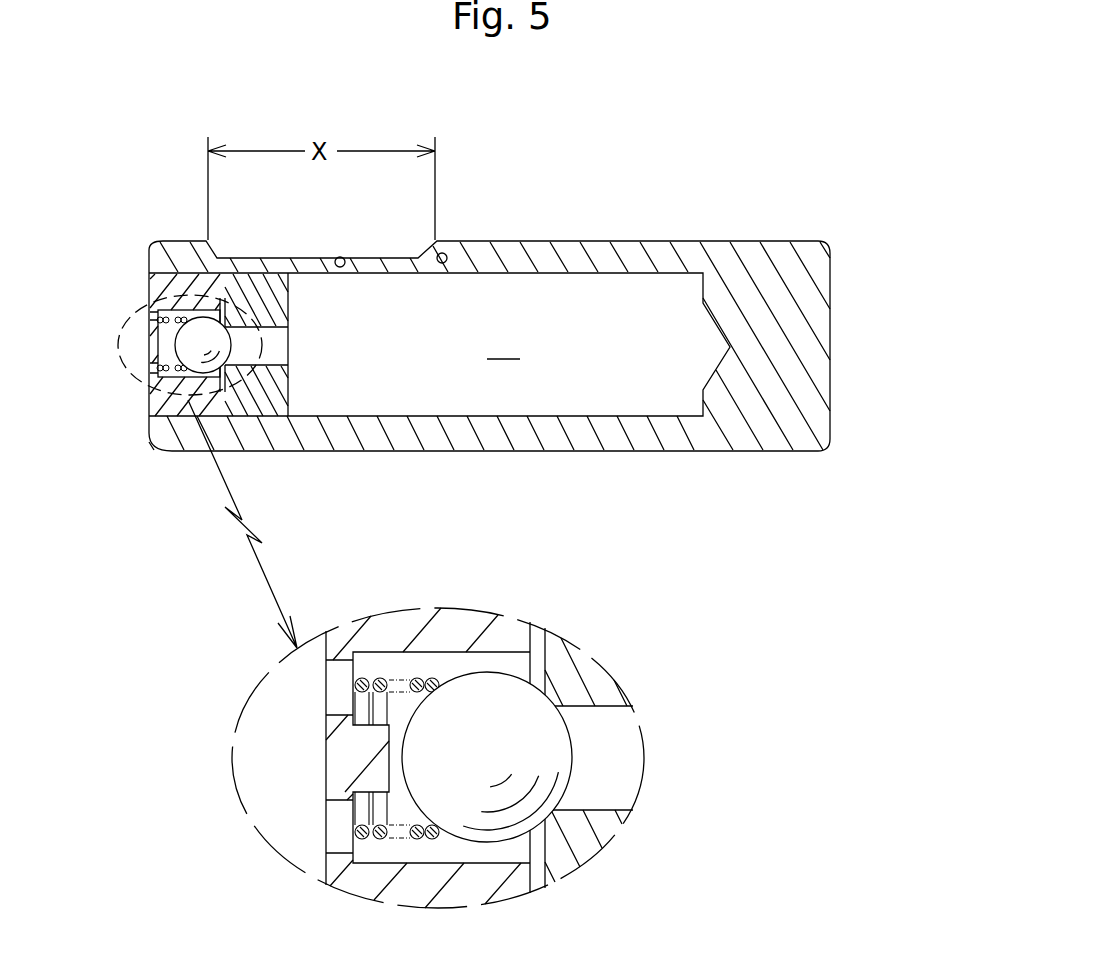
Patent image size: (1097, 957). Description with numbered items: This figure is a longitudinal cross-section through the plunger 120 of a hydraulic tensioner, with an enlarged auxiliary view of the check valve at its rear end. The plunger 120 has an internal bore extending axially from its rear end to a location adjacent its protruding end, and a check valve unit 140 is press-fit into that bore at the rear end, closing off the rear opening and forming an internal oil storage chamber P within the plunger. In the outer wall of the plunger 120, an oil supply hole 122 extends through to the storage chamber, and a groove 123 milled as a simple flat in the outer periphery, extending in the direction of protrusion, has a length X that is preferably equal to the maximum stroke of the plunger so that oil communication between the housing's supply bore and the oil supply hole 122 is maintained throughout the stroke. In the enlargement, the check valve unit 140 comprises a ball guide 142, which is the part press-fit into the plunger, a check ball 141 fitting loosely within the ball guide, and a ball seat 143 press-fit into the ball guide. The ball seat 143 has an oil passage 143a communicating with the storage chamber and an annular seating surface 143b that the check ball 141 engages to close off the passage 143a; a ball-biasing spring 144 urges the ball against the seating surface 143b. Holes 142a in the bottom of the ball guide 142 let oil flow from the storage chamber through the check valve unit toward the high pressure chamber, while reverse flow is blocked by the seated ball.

The plunger 120 is at (823, 348).
The oil supply hole 122 is at (445, 253).
The groove 123 is at (343, 257).
The check valve unit 140 is at (167, 402).
The check ball 141 is at (480, 703).
The ball guide 142 is at (480, 623).
The holes 142a is at (338, 714).
The ball seat 143 is at (790, 698).
The oil passage 143a is at (602, 810).
The annular seating surface 143b is at (541, 706).
The ball-biasing spring 144 is at (381, 679).